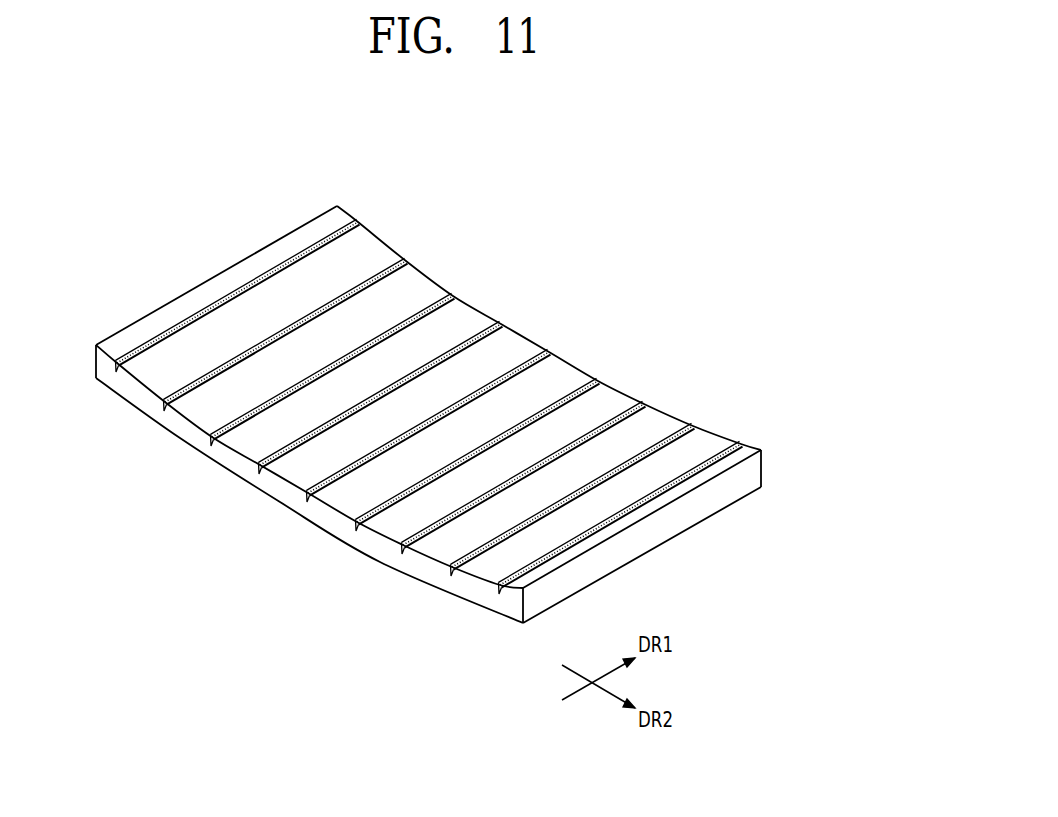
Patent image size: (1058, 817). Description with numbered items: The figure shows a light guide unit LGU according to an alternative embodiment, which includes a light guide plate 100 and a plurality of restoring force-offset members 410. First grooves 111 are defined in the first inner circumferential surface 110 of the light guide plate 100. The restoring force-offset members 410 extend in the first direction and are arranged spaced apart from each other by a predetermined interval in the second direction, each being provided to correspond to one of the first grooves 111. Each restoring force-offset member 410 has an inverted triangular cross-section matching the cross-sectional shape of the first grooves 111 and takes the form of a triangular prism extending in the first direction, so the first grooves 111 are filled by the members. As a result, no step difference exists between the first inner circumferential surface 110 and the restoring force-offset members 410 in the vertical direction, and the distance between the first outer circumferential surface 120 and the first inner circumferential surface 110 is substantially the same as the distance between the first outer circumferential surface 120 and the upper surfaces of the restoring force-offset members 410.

The light guide unit LGU is at (665, 245).
The light guide plate 100 is at (770, 440).
The first inner circumferential surface 110 is at (613, 400).
The first grooves 111 is at (550, 355).
The first outer circumferential surface 120 is at (467, 602).
The restoring force-offset member 410 is at (482, 335).